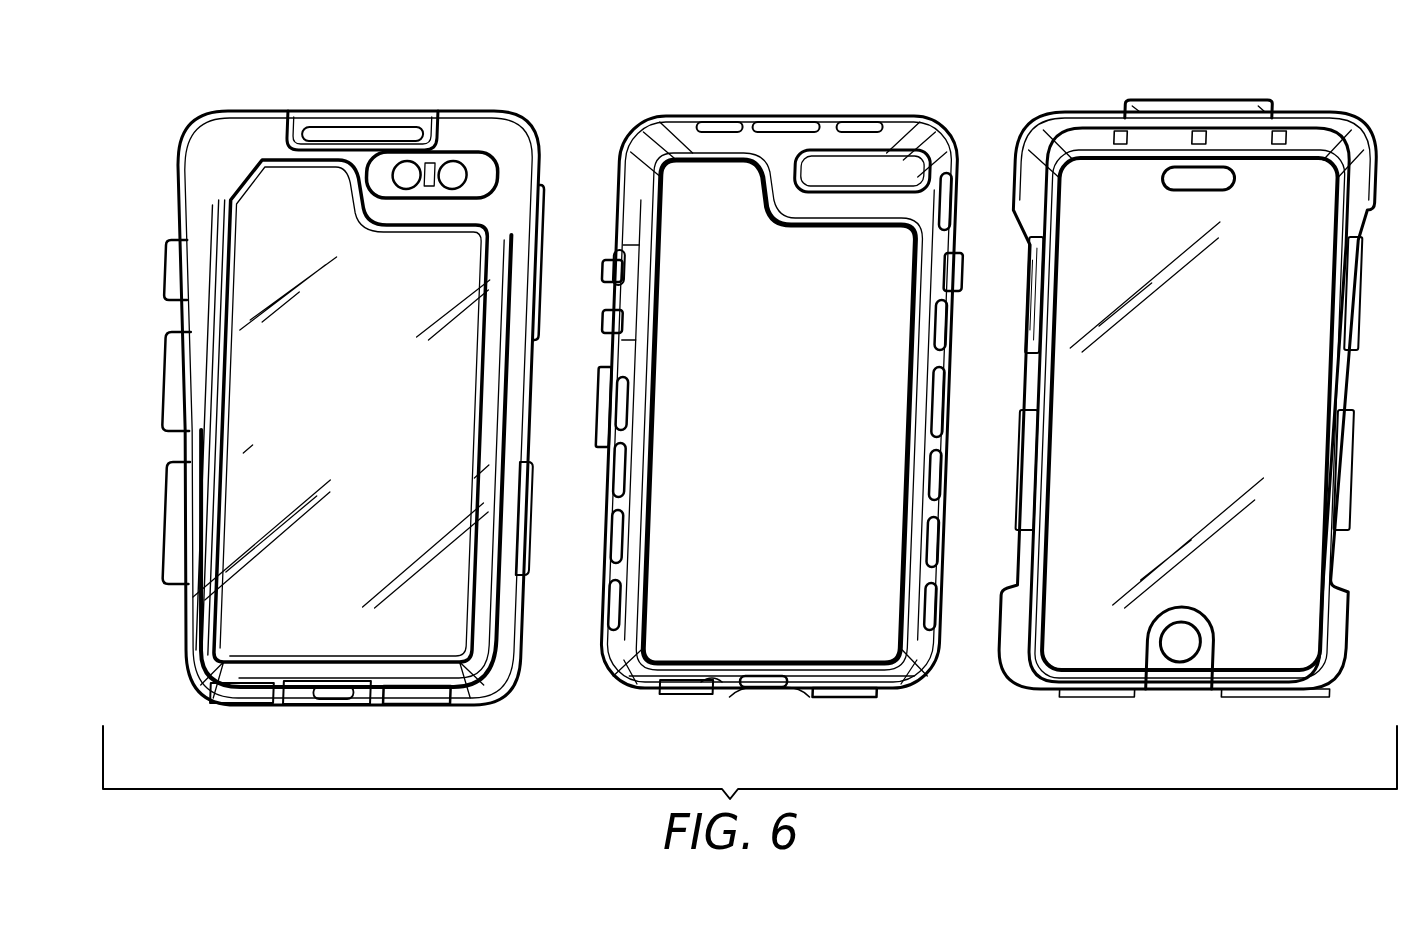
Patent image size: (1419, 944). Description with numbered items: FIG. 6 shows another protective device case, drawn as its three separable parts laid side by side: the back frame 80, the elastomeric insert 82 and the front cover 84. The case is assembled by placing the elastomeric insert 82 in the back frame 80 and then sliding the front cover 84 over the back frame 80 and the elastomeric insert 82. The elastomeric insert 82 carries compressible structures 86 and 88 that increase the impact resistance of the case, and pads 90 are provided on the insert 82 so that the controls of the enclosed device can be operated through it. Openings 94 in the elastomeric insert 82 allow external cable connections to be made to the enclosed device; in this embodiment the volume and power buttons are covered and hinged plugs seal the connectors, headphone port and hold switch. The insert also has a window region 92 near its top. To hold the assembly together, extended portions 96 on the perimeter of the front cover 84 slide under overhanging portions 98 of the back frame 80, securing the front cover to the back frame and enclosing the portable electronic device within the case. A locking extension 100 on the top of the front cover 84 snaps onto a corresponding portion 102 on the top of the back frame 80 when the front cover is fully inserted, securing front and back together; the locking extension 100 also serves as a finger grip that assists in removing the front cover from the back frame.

The back frame 80 is at (295, 708).
The elastomeric insert 82 is at (724, 696).
The front cover 84 is at (1141, 690).
The compressible structure 86 is at (677, 117).
The compressible structure 88 is at (941, 534).
The pads 90 is at (614, 262).
The camera window 92 is at (857, 168).
The openings 94 is at (768, 684).
The extended portions 96 is at (1026, 304).
The overhanging portions 98 is at (176, 424).
The locking extension 100 is at (1243, 103).
The corresponding portion 102 is at (373, 118).